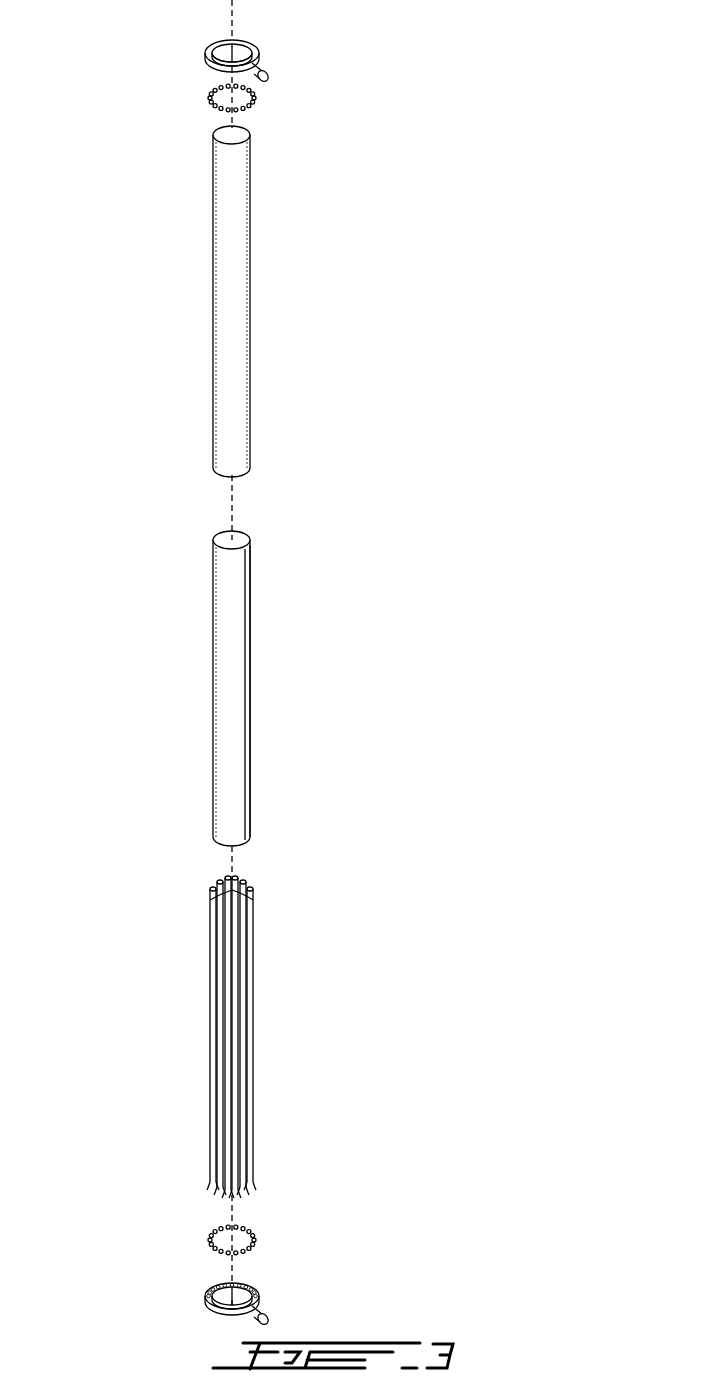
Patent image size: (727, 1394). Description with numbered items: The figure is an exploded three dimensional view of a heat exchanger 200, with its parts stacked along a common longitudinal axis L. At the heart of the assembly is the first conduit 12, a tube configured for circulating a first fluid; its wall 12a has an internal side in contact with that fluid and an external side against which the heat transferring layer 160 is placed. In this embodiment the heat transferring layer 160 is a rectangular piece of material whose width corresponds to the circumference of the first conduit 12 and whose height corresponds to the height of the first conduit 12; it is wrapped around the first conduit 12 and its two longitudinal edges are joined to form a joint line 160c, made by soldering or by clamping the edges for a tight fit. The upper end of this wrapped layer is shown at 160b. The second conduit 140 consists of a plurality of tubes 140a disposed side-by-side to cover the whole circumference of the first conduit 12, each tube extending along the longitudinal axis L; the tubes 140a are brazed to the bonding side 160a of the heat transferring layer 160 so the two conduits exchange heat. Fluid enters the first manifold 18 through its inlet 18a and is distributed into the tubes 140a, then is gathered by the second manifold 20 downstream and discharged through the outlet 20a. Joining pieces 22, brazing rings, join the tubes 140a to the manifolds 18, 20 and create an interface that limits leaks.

The heat exchanger 200 is at (474, 156).
The longitudinal axis L is at (232, 12).
The first manifold 18 is at (204, 50).
The inlet 18a is at (266, 75).
The joining pieces 22 is at (258, 106).
The first conduit 12 is at (270, 247).
The wall 12a is at (251, 355).
The heat transferring layer 160 is at (270, 647).
The tube upper end 160b is at (225, 543).
The joint line 160c is at (245, 726).
The bonding side 160a is at (250, 787).
The second conduit 140 is at (277, 1050).
The plurality of tubes 140a is at (251, 922).
The second manifold 20 is at (205, 1283).
The outlet 20a is at (266, 1318).